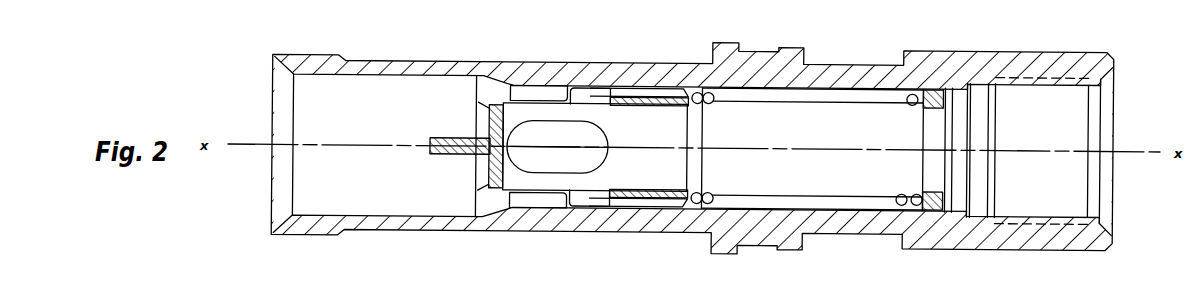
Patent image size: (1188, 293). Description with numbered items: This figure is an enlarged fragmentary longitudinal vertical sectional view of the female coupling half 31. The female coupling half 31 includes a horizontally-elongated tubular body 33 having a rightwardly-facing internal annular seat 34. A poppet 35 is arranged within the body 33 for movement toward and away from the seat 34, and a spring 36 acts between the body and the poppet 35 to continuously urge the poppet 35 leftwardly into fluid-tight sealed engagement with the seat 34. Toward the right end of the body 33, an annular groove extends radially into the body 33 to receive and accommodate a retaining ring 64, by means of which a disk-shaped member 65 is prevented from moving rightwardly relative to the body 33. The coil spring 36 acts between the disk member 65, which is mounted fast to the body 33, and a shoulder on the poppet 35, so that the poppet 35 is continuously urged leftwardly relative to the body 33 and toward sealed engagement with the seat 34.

The female coupling half 31 is at (640, 37).
The tubular body 33 is at (503, 70).
The internal annular seat 34 is at (503, 188).
The poppet 35 is at (595, 200).
The spring 36 is at (775, 105).
The retaining ring 64 is at (950, 90).
The disk-shaped member 65 is at (920, 193).